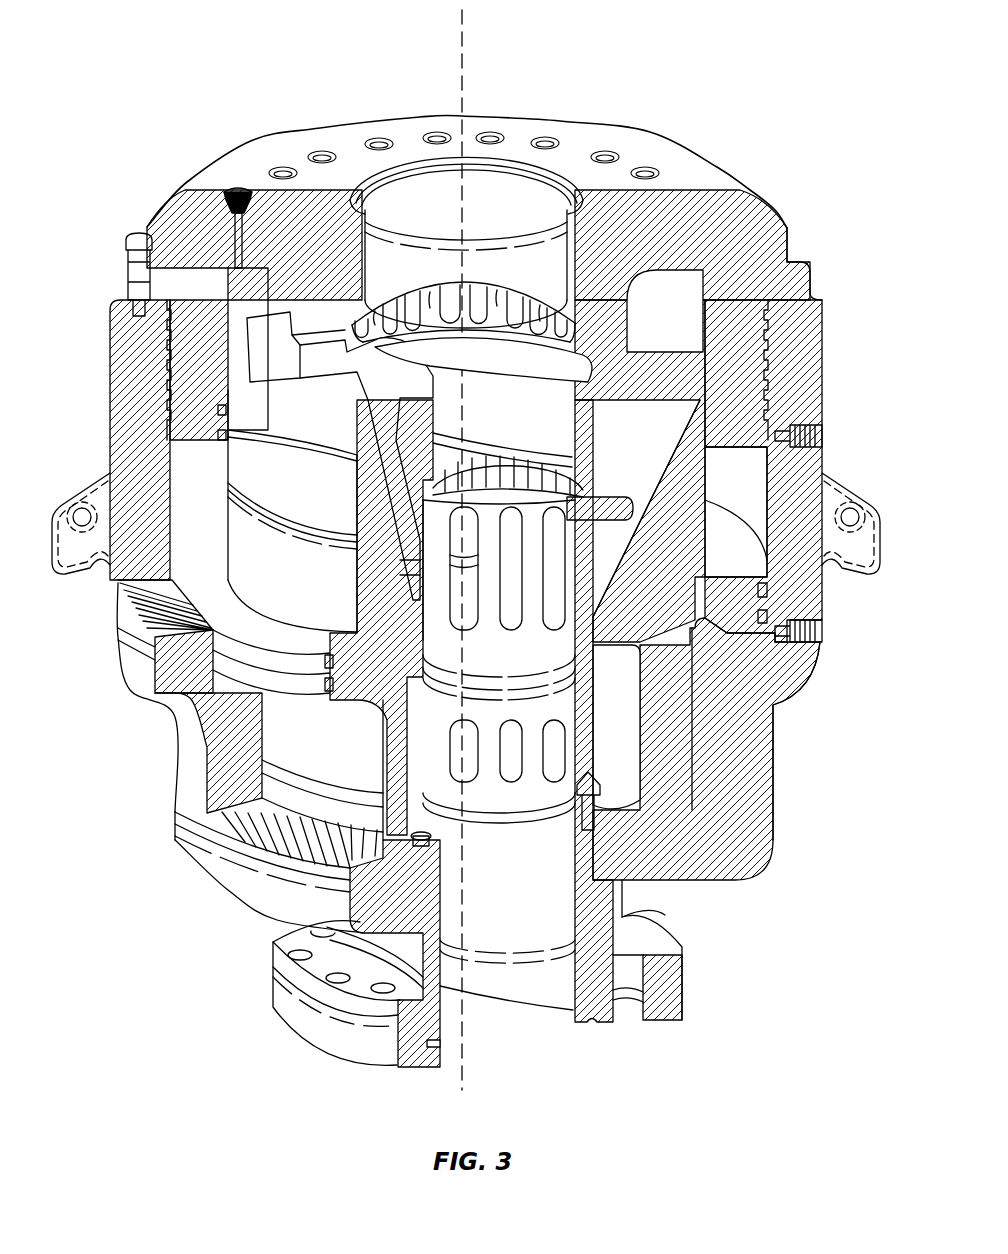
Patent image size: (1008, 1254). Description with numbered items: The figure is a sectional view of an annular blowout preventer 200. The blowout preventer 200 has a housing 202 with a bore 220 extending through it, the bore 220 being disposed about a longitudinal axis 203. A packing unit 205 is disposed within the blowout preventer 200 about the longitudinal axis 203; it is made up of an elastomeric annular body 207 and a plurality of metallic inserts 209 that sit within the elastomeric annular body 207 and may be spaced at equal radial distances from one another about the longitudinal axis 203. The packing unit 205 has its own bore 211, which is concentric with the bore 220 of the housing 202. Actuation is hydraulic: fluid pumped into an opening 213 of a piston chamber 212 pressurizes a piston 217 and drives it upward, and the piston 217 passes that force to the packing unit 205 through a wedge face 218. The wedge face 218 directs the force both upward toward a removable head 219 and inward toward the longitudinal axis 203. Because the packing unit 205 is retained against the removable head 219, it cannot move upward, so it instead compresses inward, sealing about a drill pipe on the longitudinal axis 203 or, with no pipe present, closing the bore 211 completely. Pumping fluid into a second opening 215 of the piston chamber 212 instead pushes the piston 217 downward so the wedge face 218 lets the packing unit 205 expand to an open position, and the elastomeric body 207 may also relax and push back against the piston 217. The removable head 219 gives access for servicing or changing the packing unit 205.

The annular blowout preventer 200 is at (680, 77).
The housing 202 is at (130, 455).
The longitudinal axis 203 is at (458, 44).
The packing unit 205 is at (697, 270).
The elastomeric annular body 207 is at (690, 372).
The metallic inserts 209 is at (268, 385).
The bore 211 is at (650, 377).
The piston chamber 212 is at (735, 495).
The opening 213 is at (825, 636).
The opening 215 is at (825, 438).
The piston 217 is at (737, 608).
The wedge face 218 is at (652, 605).
The removable head 219 is at (200, 240).
The bore 220 is at (542, 976).